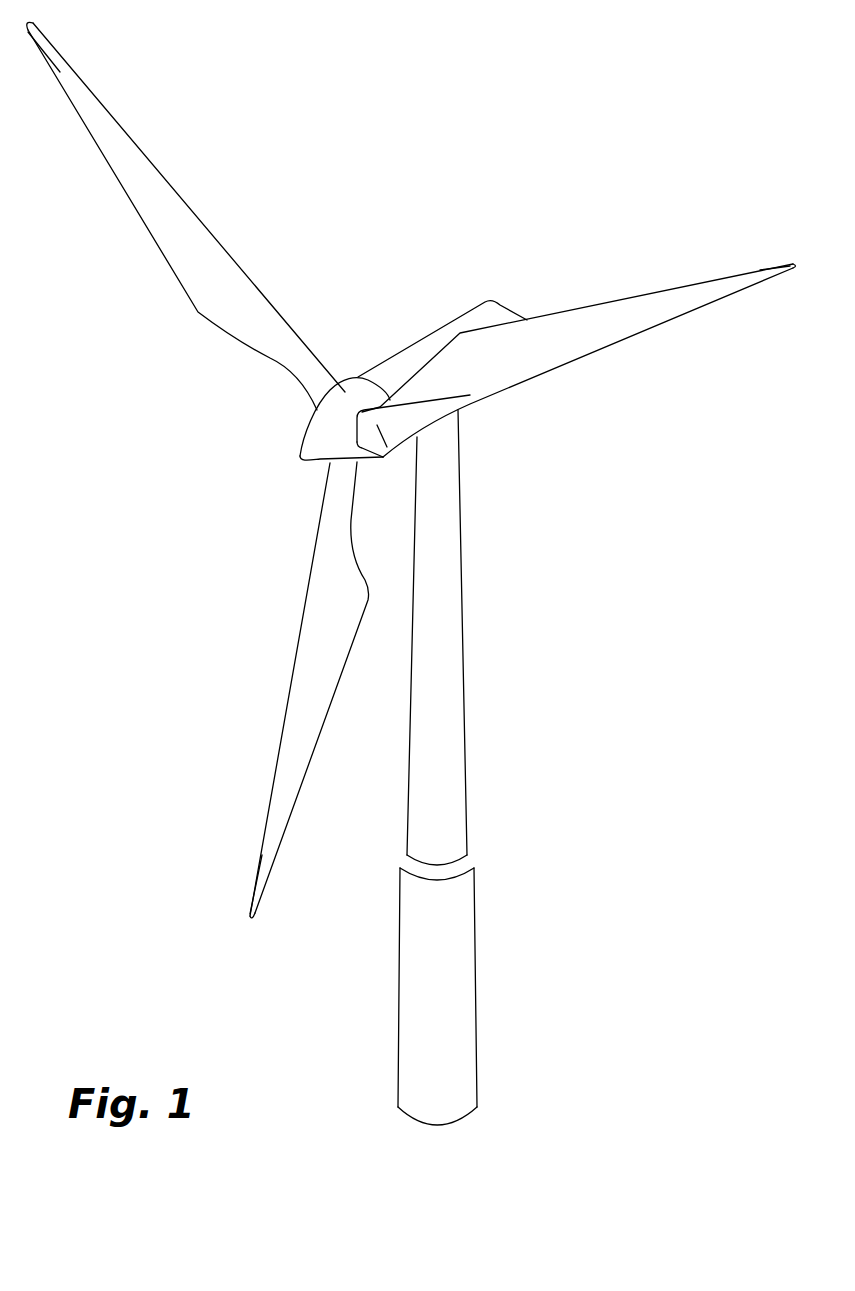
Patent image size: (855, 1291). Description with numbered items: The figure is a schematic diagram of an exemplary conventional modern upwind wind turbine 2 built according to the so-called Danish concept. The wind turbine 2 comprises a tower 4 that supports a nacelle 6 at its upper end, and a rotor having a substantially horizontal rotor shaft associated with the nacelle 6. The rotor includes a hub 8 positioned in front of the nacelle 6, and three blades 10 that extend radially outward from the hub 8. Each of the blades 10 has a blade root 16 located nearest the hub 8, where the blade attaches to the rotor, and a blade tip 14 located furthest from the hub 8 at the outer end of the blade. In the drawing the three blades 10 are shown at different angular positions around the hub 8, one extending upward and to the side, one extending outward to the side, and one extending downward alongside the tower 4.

The wind turbine 2 is at (553, 708).
The tower 4 is at (461, 638).
The nacelle 6 is at (398, 354).
The hub 8 is at (307, 440).
The blades 10 is at (213, 300).
The blade tip 14 is at (70, 73).
The blade root 16 is at (313, 405).